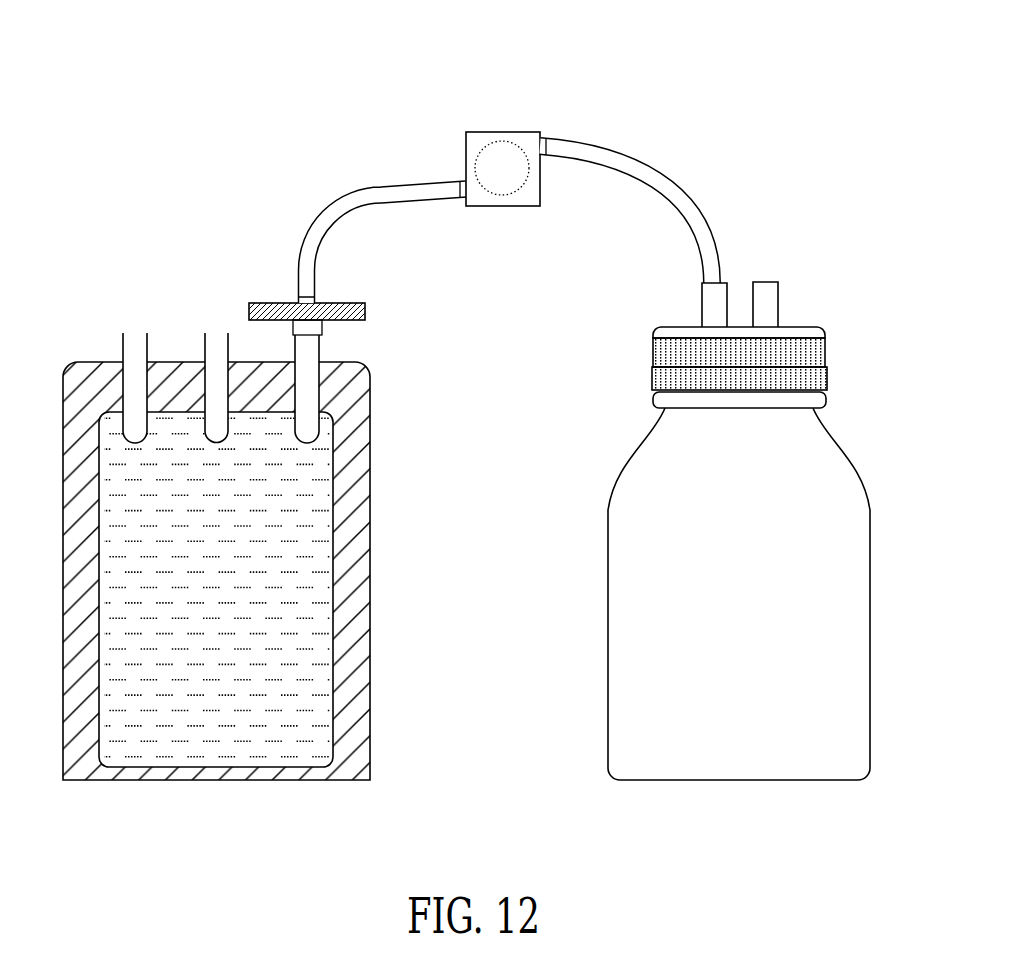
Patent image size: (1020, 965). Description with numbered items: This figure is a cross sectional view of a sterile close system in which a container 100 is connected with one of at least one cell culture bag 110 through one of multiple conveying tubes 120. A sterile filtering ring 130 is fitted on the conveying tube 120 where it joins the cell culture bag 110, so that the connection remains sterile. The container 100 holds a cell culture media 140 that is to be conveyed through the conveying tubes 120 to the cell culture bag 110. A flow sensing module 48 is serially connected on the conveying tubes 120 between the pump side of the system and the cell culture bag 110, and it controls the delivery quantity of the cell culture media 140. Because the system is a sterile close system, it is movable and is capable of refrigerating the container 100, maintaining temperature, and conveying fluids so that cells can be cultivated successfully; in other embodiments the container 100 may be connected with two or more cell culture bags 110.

The flow sensing module 48 is at (514, 114).
The container 100 is at (858, 424).
The cell culture bag 110 is at (90, 347).
The conveying tubes 120 is at (699, 170).
The sterile filtering ring 130 is at (262, 288).
The cell culture media 140 is at (180, 445).